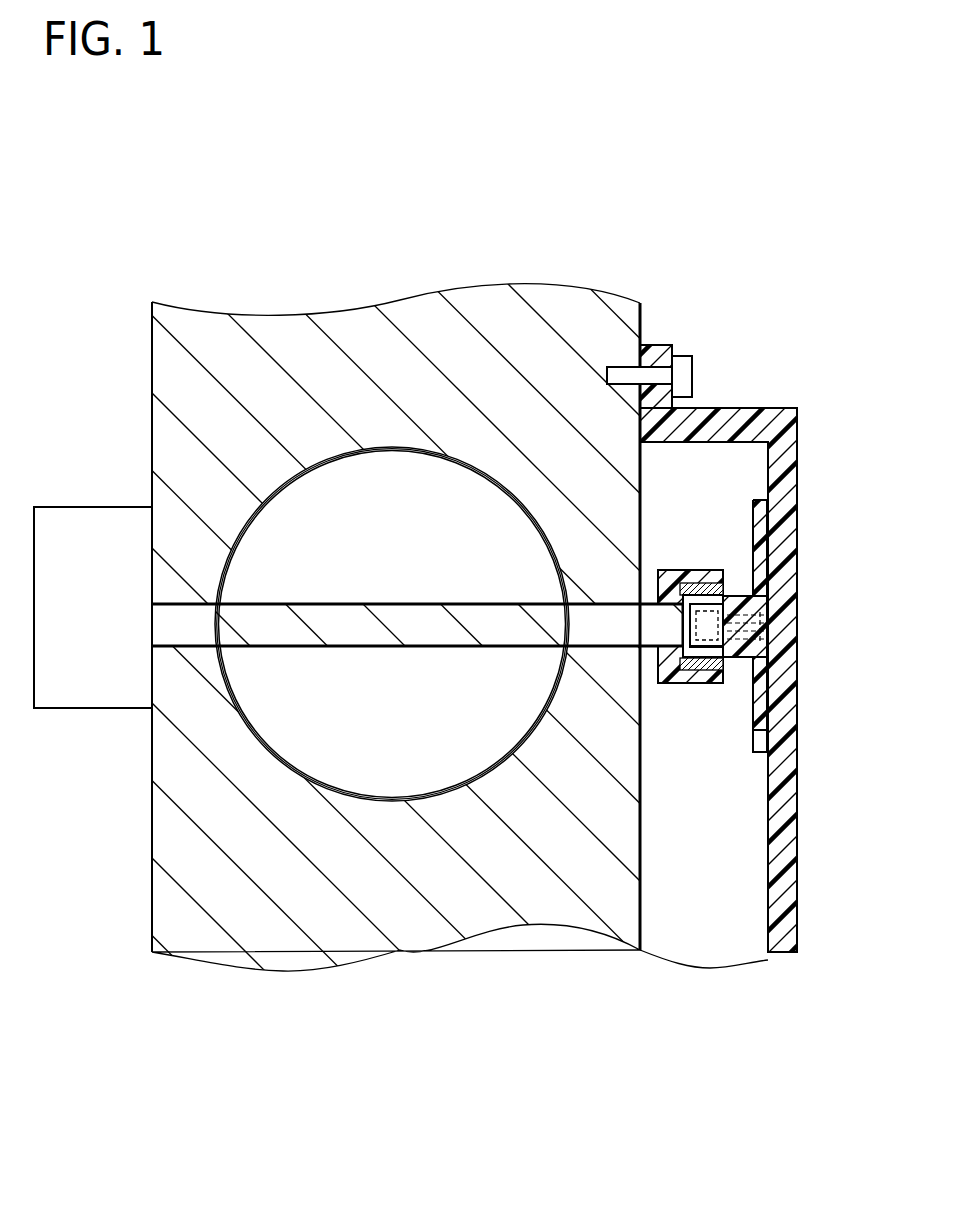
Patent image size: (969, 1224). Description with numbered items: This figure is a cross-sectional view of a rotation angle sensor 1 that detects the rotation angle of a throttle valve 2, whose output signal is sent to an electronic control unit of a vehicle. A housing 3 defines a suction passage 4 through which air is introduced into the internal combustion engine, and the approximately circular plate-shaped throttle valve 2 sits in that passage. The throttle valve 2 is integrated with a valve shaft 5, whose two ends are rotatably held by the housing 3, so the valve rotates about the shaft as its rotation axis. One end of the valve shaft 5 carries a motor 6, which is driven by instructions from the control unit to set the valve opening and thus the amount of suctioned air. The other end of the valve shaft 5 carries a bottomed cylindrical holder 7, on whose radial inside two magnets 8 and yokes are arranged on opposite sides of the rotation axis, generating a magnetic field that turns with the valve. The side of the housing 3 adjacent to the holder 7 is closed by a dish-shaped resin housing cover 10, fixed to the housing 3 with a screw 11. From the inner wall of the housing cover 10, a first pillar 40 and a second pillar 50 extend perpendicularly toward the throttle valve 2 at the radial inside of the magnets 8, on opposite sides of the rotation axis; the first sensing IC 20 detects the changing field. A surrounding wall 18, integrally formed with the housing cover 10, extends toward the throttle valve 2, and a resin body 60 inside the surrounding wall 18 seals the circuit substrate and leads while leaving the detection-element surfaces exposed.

The rotation angle sensor 1 is at (742, 242).
The throttle valve 2 is at (388, 520).
The housing 3 is at (220, 432).
The suction passage 4 is at (483, 778).
The valve shaft 5 is at (322, 635).
The motor 6 is at (88, 507).
The holder 7 is at (665, 683).
The magnets 8 is at (712, 588).
The housing cover 10 is at (770, 408).
The screw 11 is at (692, 377).
The surrounding wall 18 is at (753, 742).
The first sensing IC 20 is at (702, 620).
The first pillar 40 is at (736, 600).
The second pillar 50 is at (745, 652).
The resin body 60 is at (760, 568).